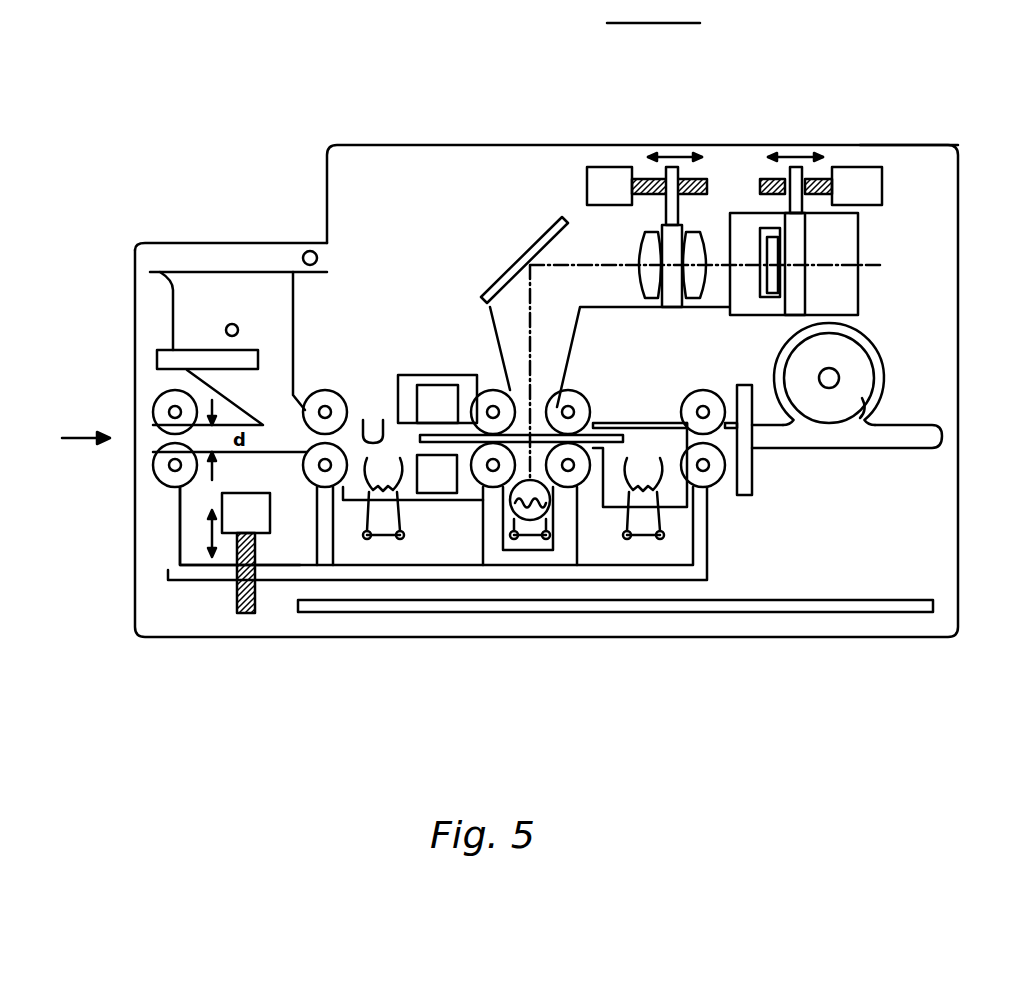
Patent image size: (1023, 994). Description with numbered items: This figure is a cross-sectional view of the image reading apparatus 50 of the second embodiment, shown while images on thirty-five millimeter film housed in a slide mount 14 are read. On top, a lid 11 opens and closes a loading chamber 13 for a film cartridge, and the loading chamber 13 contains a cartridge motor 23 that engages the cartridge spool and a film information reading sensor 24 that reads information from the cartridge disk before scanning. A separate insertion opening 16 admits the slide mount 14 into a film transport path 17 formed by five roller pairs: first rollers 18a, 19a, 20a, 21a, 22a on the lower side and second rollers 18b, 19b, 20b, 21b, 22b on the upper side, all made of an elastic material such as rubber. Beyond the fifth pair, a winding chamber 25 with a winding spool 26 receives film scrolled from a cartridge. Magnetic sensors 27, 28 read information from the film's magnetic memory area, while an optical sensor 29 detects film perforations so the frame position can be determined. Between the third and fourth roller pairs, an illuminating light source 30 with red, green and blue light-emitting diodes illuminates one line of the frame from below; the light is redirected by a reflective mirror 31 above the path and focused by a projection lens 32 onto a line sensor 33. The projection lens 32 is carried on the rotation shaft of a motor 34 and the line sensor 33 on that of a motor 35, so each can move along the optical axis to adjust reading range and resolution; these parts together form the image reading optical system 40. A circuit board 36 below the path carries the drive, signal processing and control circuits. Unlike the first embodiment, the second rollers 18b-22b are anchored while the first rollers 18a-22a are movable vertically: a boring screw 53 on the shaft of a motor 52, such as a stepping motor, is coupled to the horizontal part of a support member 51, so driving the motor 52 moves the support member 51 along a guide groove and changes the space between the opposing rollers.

The lid 11 is at (163, 257).
The loading chamber 13 is at (180, 312).
The slide mount 14 is at (468, 435).
The insertion opening 16 is at (148, 438).
The film transport path 17 is at (365, 422).
The first roller 18a is at (163, 475).
The second roller 18b is at (155, 425).
The first roller 19a is at (312, 478).
The second roller 19b is at (305, 423).
The first roller 20a is at (476, 478).
The second roller 20b is at (473, 423).
The first roller 21a is at (583, 478).
The second roller 21b is at (588, 420).
The first roller 22a is at (718, 478).
The second roller 22b is at (723, 420).
The cartridge motor 23 is at (224, 330).
The film information reading sensor 24 is at (178, 362).
The winding chamber 25 is at (870, 402).
The winding spool 26 is at (877, 363).
The magnetic sensor 27 is at (378, 540).
The magnetic sensor 28 is at (650, 540).
The optical sensor 29 is at (440, 387).
The illuminating light source 30 is at (535, 480).
The reflective mirror 31 is at (540, 228).
The projection lens 32 is at (702, 232).
The line sensor 33 is at (758, 247).
The motor 34 is at (630, 165).
The motor 35 is at (858, 167).
The circuit board 36 is at (900, 612).
The image reading optical system 40 is at (840, 86).
The image reading apparatus 50 is at (922, 145).
The support member 51 is at (185, 568).
The motor 52 is at (224, 535).
The boring screw 53 is at (238, 614).